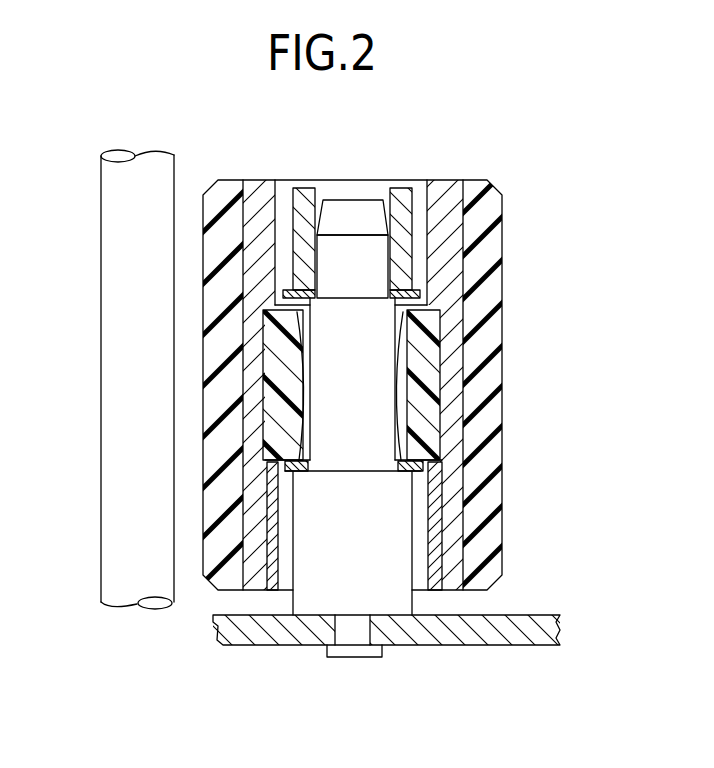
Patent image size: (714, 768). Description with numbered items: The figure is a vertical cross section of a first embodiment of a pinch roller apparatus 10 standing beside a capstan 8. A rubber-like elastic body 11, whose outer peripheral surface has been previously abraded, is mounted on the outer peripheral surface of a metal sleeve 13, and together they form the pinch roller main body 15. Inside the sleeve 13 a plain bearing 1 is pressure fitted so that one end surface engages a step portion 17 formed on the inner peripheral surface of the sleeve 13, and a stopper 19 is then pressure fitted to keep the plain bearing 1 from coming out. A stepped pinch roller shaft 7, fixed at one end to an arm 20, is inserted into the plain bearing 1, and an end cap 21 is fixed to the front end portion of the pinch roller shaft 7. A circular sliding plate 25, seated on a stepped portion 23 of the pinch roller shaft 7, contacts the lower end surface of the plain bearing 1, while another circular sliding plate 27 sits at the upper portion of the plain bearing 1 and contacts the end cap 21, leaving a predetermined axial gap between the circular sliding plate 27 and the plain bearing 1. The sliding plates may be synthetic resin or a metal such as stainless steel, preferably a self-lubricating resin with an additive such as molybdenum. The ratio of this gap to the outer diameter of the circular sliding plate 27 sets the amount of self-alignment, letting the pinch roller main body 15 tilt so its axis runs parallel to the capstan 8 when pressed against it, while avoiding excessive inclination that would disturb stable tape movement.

The plain bearing 1 is at (430, 388).
The pinch roller shaft 7 is at (343, 260).
The capstan 8 is at (122, 297).
The pinch roller apparatus 10 is at (507, 178).
The rubber-like elastic body 11 is at (497, 492).
The metal sleeve 13 is at (458, 540).
The pinch roller main body 15 is at (429, 385).
The step portion 17 is at (440, 325).
The stopper 19 is at (596, 458).
The arm 20 is at (510, 632).
The end cap 21 is at (405, 203).
The stepped portion 23 is at (333, 470).
The circular sliding plate 25 is at (445, 466).
The circular sliding plate 27 is at (428, 290).